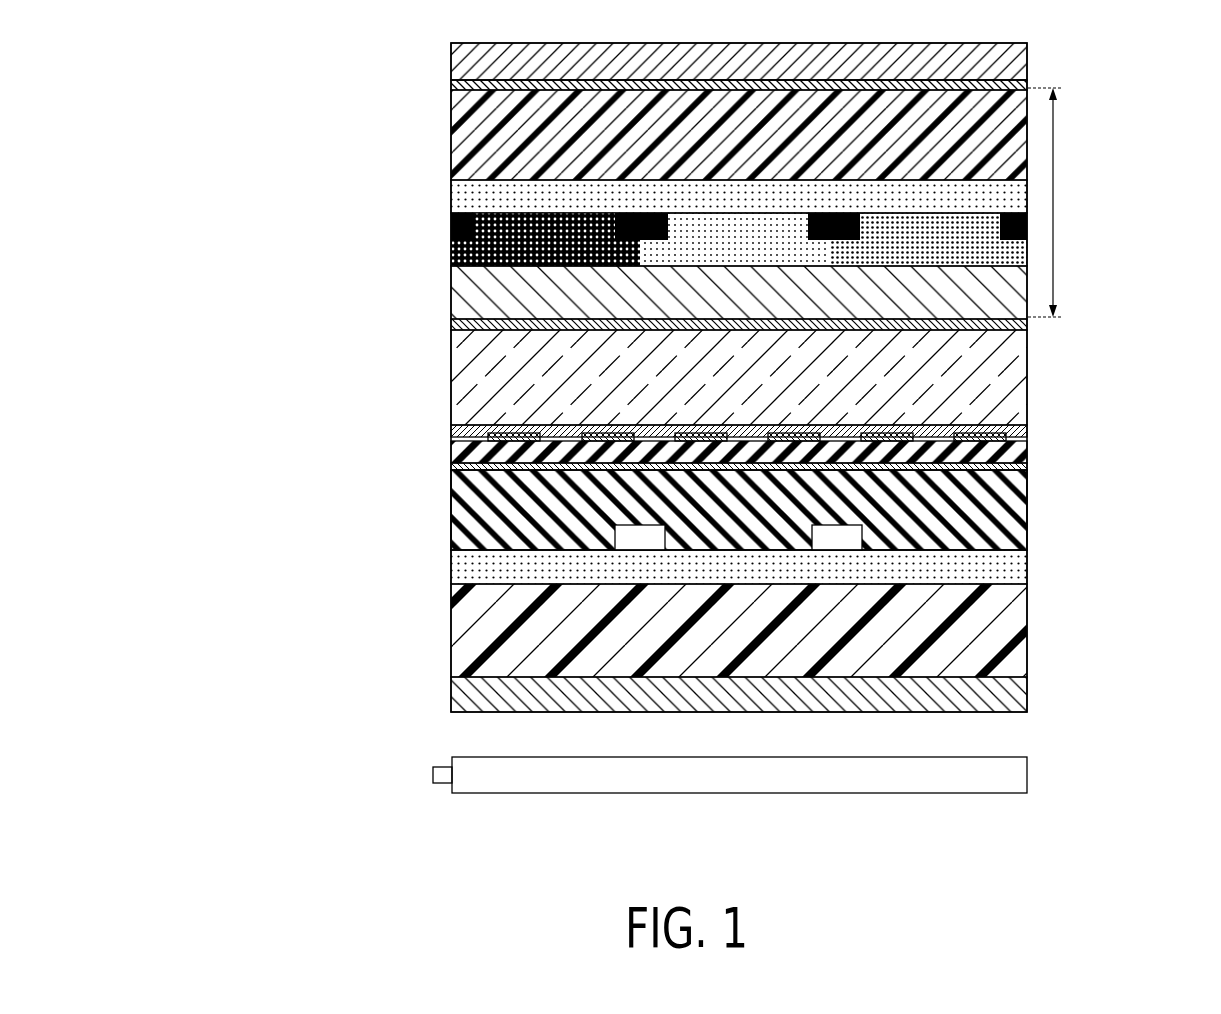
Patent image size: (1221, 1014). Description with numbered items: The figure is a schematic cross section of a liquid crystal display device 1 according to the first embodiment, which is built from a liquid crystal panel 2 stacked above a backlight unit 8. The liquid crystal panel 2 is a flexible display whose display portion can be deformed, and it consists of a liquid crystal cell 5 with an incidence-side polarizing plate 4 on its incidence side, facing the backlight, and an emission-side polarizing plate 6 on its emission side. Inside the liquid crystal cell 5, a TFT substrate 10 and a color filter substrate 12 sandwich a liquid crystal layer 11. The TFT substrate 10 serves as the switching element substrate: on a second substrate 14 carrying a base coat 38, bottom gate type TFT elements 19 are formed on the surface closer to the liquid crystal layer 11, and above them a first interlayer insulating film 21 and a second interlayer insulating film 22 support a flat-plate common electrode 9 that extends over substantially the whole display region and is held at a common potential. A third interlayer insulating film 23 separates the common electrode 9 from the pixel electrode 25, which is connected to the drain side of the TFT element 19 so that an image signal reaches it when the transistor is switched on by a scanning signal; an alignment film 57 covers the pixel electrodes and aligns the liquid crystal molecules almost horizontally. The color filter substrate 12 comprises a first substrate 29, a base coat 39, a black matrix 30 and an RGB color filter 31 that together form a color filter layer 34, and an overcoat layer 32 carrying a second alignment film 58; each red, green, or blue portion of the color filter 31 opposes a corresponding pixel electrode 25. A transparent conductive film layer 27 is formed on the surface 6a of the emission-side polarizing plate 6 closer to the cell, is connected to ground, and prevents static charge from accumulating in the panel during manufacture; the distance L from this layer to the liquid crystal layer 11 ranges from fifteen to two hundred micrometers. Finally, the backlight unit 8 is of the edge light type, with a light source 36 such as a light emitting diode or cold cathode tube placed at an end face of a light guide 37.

The liquid crystal display device 1 is at (236, 91).
The liquid crystal panel 2 is at (250, 199).
The incidence-side polarizing plate 4 is at (463, 692).
The liquid crystal cell 5 is at (290, 170).
The emission-side polarizing plate 6 is at (455, 46).
The surface of the emission-side polarizing plate 6a is at (905, 87).
The backlight unit 8 is at (420, 774).
The common electrode 9 is at (452, 468).
The TFT substrate 10 is at (346, 380).
The liquid crystal layer 11 is at (466, 345).
The color filter substrate 12 is at (343, 68).
The second substrate 14 is at (465, 645).
The TFT element 19 is at (644, 537).
The first interlayer insulating film 21 is at (475, 536).
The second interlayer insulating film 22 is at (710, 511).
The third interlayer insulating film 23 is at (463, 447).
The pixel electrode 25 is at (512, 432).
The transparent conductive film layer 27 is at (463, 80).
The first substrate 29 is at (465, 118).
The black matrix 30 is at (452, 226).
The color filter 31 is at (452, 255).
The overcoat layer 32 is at (465, 278).
The color filter layer 34 is at (390, 212).
The light source 36 is at (448, 786).
The light guide 37 is at (511, 776).
The base coat 38 is at (465, 573).
The base coat 39 is at (462, 186).
The alignment film 57 is at (462, 428).
The alignment film 58 is at (452, 323).